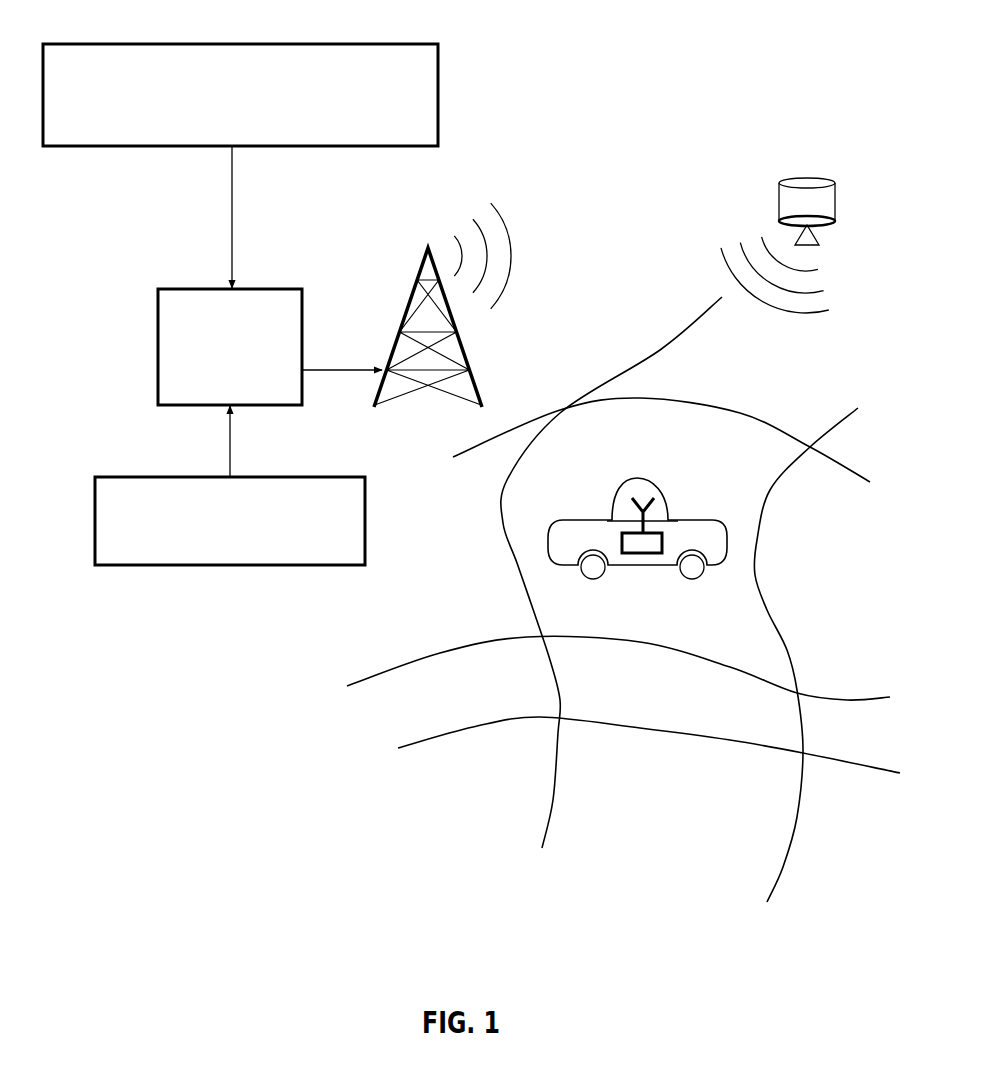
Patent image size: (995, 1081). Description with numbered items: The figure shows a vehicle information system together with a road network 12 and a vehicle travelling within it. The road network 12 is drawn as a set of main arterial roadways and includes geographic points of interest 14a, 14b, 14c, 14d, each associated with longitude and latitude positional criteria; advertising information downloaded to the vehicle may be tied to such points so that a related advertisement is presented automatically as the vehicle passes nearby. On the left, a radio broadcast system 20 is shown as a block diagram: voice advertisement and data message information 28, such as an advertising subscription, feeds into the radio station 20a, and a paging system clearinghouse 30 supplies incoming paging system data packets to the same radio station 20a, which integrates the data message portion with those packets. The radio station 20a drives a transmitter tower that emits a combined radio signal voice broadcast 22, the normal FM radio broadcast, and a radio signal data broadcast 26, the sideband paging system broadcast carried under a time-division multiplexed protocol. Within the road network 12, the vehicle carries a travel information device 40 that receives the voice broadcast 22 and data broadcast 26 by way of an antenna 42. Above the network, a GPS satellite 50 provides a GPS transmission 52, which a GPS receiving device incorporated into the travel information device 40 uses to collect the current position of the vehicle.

The road network 12 is at (502, 755).
The geographic point of interest 14a is at (808, 667).
The geographic point of interest 14b is at (445, 628).
The geographic point of interest 14c is at (796, 415).
The geographic point of interest 14d is at (578, 765).
The radio broadcast system 20 is at (113, 312).
The radio station 20a is at (287, 297).
The radio signal voice broadcast 22 is at (502, 213).
The radio signal data broadcast 26 is at (505, 292).
The voice advertisement and data message information 28 is at (415, 53).
The paging system clearinghouse 30 is at (131, 560).
The travel information device 40 is at (663, 537).
The antenna 42 is at (646, 511).
The GPS satellite 50 is at (830, 197).
The GPS transmission 52 is at (810, 313).